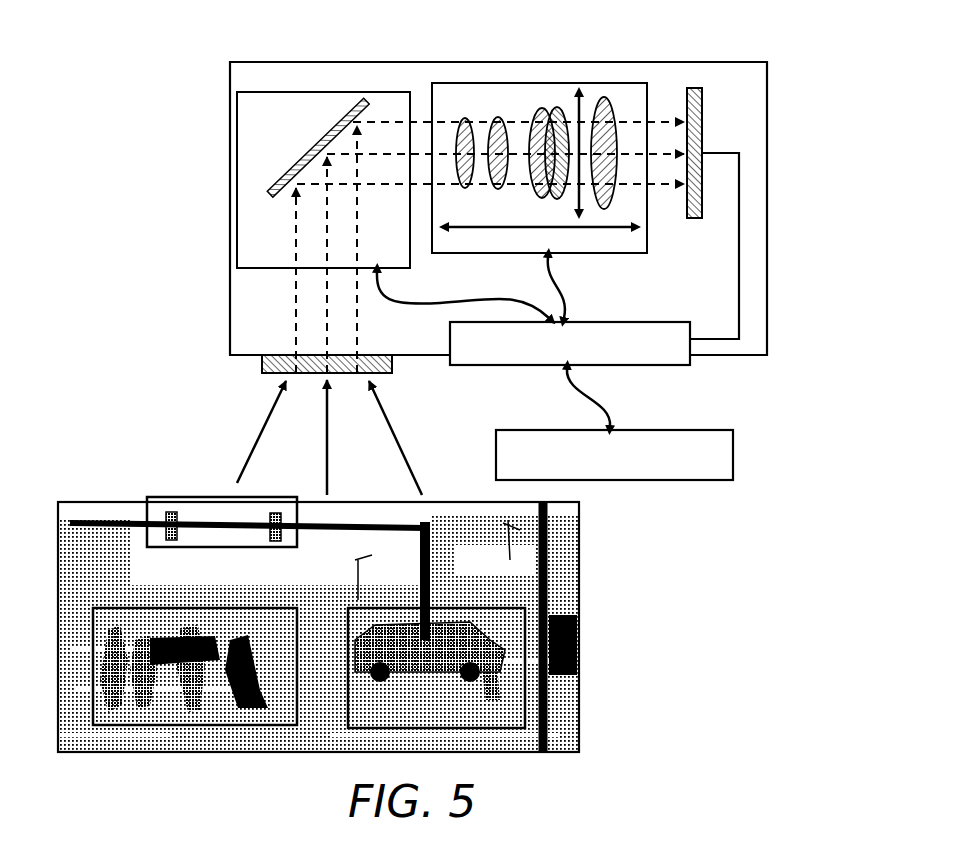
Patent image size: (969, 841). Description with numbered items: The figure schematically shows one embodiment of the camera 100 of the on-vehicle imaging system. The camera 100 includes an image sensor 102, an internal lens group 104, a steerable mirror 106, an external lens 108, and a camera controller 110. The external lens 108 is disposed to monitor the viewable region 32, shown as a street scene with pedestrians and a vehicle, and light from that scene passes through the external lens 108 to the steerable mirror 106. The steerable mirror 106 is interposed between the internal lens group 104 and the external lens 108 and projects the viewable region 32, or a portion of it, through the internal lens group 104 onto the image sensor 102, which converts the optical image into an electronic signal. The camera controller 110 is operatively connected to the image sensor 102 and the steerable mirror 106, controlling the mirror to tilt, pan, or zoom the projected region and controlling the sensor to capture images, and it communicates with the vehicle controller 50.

The camera 100 is at (226, 118).
The image sensor 102 is at (704, 132).
The internal lens group 104 is at (526, 106).
The steerable mirror 106 is at (316, 150).
The external lens 108 is at (262, 372).
The camera controller 110 is at (533, 311).
The vehicle controller 50 is at (614, 424).
The viewable region 32 is at (120, 498).